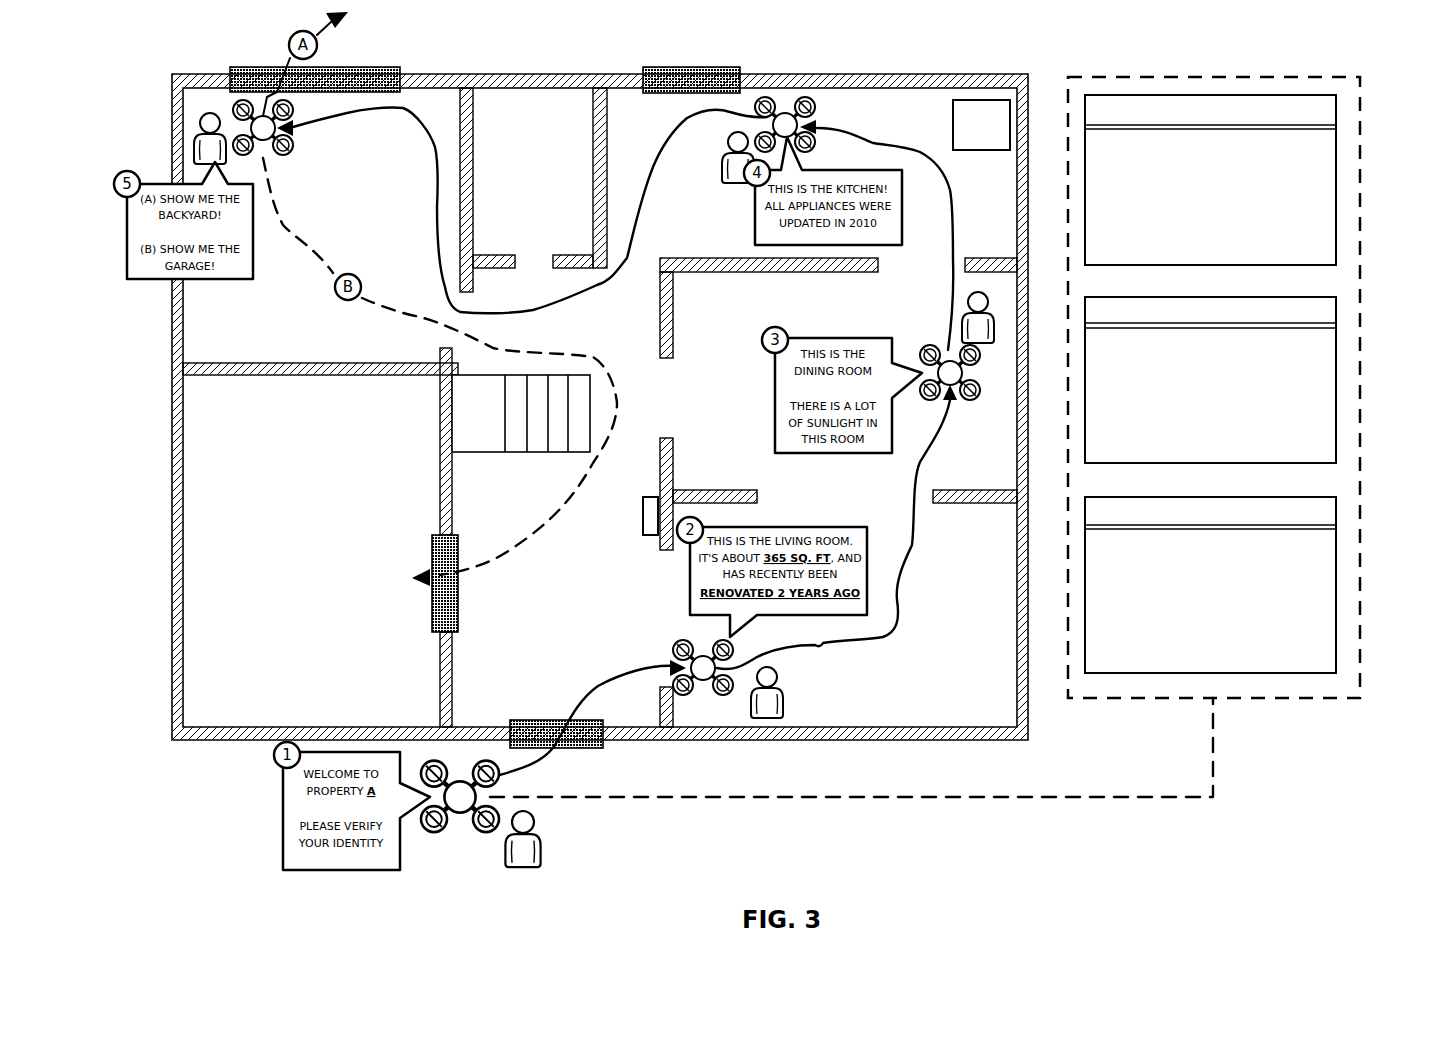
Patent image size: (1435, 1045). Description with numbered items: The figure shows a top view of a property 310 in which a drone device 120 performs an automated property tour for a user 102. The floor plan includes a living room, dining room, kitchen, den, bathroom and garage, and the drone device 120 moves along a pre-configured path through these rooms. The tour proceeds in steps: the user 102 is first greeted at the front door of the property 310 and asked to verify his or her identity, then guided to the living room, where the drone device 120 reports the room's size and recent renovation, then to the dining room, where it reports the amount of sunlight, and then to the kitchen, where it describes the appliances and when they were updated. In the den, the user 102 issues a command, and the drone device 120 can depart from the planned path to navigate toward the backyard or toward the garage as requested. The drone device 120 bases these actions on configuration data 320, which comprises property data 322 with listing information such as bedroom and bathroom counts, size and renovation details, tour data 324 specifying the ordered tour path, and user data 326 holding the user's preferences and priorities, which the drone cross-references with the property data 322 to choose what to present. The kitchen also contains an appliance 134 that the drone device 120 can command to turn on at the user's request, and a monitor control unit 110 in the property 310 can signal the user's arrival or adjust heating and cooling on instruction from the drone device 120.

The property 310 is at (195, 74).
The appliance 134 is at (983, 100).
The monitor control unit 110 is at (643, 516).
The drone device 120 is at (462, 818).
The user 102 is at (519, 866).
The configuration data 320 is at (1203, 77).
The property data 322 is at (1336, 152).
The tour data 324 is at (1336, 349).
The user data 326 is at (1336, 549).